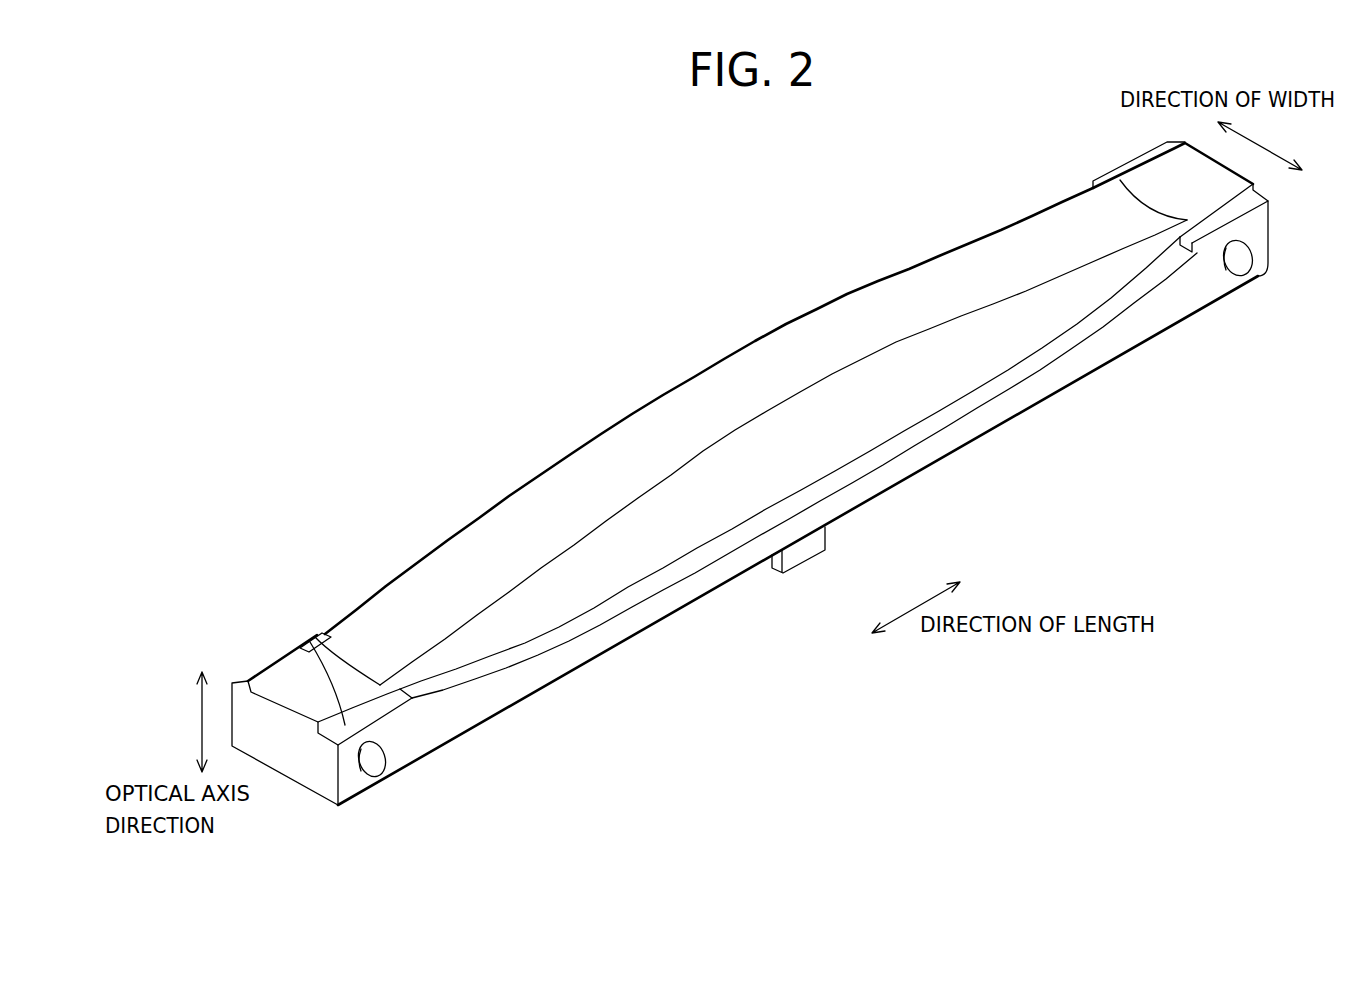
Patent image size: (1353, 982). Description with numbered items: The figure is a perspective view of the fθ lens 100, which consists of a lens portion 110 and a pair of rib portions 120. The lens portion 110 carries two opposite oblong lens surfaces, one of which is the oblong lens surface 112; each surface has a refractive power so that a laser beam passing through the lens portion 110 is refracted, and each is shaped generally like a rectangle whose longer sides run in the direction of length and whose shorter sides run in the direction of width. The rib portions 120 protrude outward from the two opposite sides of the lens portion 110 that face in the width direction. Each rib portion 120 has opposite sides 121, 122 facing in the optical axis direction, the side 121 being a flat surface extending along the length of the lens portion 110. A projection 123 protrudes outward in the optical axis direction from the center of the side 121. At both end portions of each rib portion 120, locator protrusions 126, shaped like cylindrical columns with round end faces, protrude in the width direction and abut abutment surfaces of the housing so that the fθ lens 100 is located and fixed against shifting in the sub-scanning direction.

The fθ lens 100 is at (492, 270).
The lens portion 110 is at (663, 413).
The oblong lens surface 112 is at (802, 335).
The rib portion 120 is at (345, 725).
The side 121 is at (940, 460).
The side 122 is at (982, 401).
The projection 123 is at (800, 553).
The locator protrusion 126 is at (1242, 262).